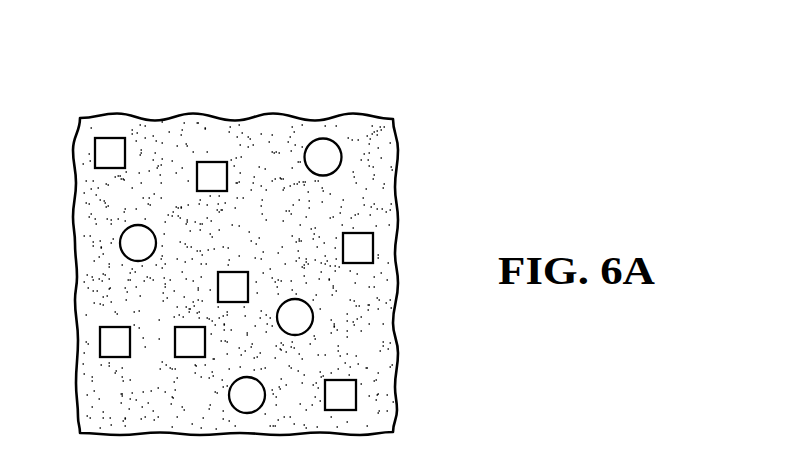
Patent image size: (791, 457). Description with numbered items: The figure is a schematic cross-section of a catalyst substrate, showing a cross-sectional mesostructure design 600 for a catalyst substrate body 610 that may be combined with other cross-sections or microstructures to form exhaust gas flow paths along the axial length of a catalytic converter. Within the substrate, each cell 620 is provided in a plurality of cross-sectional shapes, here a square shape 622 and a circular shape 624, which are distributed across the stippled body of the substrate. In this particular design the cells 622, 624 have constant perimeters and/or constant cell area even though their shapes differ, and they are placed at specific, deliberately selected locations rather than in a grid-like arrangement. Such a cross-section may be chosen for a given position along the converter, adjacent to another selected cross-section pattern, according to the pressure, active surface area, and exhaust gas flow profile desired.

The cross-sectional mesostructure design 600 is at (414, 78).
The catalyst substrate body 610 is at (357, 200).
The cell 620 is at (215, 177).
The square shape cell 622 is at (208, 162).
The circular shape cell 624 is at (321, 138).